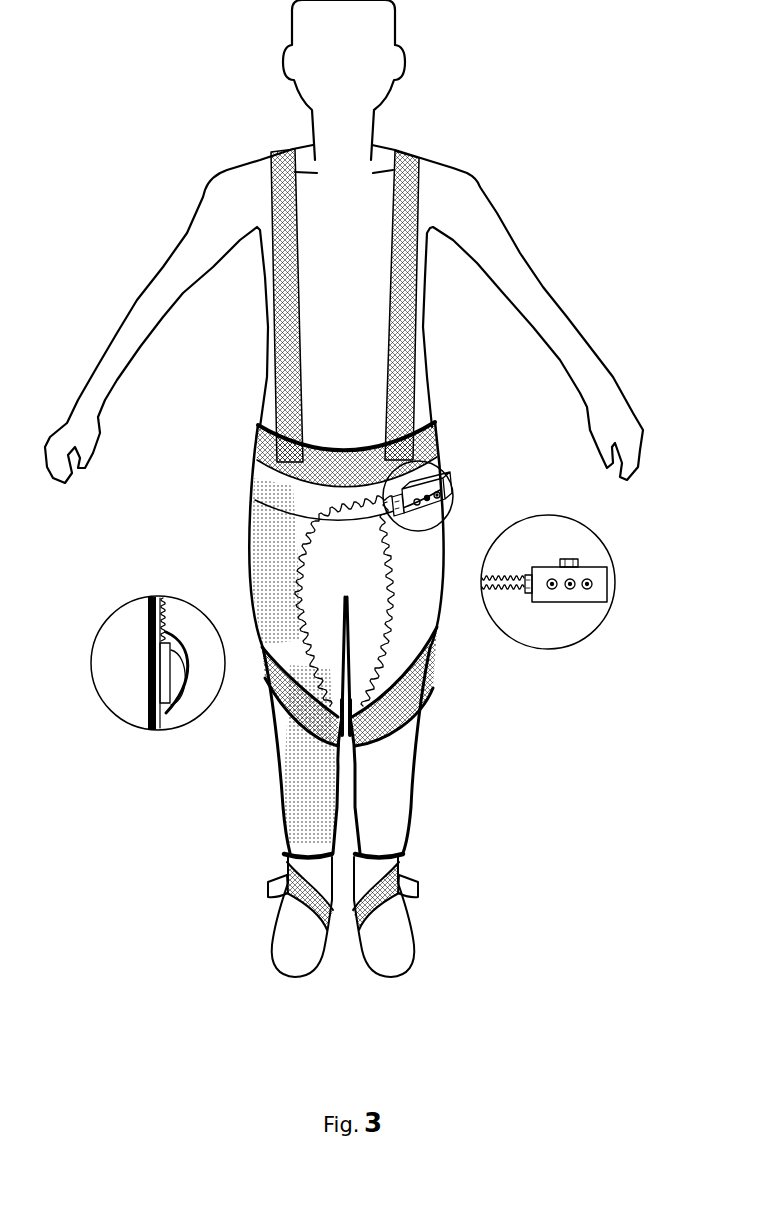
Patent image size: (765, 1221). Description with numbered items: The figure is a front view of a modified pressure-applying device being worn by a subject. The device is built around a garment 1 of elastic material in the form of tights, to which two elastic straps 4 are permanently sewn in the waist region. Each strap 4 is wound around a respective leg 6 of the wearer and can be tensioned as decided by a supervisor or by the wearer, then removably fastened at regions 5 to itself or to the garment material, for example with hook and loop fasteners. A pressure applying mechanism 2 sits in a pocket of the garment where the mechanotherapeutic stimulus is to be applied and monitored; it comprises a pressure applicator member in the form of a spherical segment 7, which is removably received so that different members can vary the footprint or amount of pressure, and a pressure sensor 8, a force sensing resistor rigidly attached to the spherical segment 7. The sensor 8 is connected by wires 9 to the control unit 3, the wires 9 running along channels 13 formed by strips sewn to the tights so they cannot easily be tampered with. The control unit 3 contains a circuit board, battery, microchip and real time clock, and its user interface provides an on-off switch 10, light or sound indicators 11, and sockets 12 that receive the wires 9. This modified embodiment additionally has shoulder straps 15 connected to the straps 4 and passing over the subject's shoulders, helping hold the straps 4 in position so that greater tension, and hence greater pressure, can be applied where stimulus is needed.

The garment 1 is at (272, 522).
The pressure applying mechanism 2 is at (333, 728).
The control unit 3 is at (357, 537).
The straps 4 is at (383, 718).
The regions 5 is at (412, 891).
The leg 6 is at (162, 661).
The spherical segment 7 is at (175, 662).
The pressure sensor 8 is at (163, 678).
The wires 9 is at (517, 587).
The on-off switch 10 is at (577, 561).
The light or sound indicators 11 is at (590, 588).
The sockets 12 is at (525, 592).
The channels 13 is at (389, 640).
The shoulder straps 15 is at (280, 167).